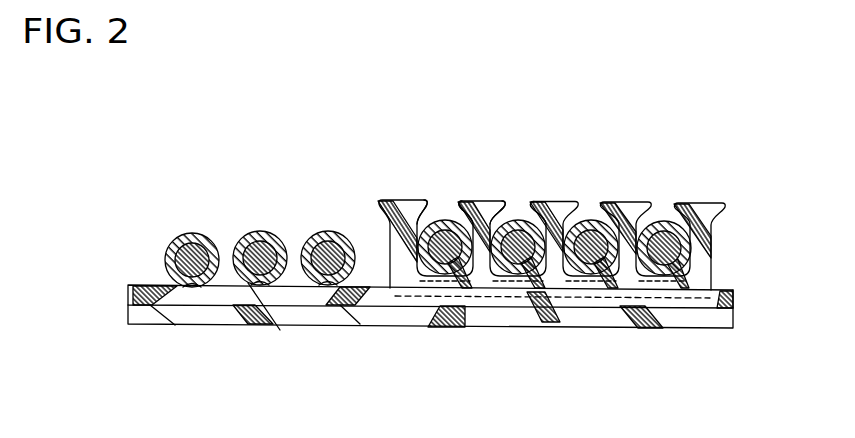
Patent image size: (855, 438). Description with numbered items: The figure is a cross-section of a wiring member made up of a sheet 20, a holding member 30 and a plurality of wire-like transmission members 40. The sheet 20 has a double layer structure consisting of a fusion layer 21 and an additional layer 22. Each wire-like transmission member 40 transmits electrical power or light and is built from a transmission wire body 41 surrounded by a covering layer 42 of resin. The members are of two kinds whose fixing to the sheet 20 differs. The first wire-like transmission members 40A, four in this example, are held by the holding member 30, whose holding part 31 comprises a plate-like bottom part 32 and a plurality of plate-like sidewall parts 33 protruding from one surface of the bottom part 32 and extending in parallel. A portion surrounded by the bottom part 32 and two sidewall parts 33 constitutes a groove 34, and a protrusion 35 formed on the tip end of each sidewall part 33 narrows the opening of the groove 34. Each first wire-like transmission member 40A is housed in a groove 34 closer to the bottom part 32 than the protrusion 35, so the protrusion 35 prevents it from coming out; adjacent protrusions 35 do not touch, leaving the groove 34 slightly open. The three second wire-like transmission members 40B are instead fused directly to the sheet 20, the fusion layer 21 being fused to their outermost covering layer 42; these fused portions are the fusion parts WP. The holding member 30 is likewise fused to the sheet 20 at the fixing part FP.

The sheet 20 is at (388, 302).
The fusion layer 21 is at (128, 291).
The additional layer 22 is at (83, 268).
The holding member 30 is at (588, 202).
The holding part 31 is at (588, 245).
The bottom part 32 is at (713, 278).
The sidewall part 33 is at (713, 246).
The groove 34 is at (577, 222).
The protrusion 35 is at (462, 198).
The wire-like transmission member 40 is at (428, 281).
The first wire-like transmission member 40A is at (422, 222).
The second wire-like transmission member 40B is at (306, 240).
The transmission wire body 41 is at (187, 238).
The covering layer 42 is at (210, 240).
The fusion part WP is at (189, 290).
The fixing part FP is at (465, 297).